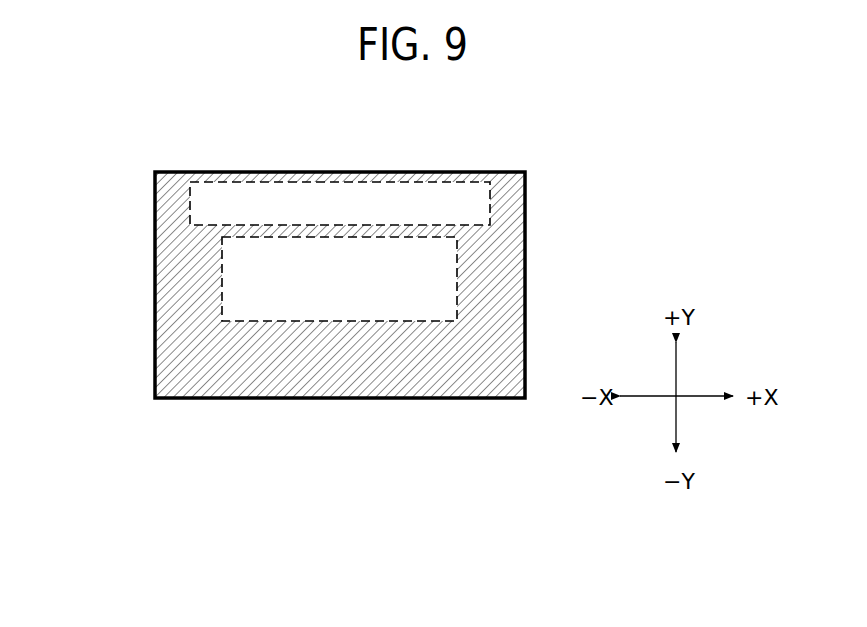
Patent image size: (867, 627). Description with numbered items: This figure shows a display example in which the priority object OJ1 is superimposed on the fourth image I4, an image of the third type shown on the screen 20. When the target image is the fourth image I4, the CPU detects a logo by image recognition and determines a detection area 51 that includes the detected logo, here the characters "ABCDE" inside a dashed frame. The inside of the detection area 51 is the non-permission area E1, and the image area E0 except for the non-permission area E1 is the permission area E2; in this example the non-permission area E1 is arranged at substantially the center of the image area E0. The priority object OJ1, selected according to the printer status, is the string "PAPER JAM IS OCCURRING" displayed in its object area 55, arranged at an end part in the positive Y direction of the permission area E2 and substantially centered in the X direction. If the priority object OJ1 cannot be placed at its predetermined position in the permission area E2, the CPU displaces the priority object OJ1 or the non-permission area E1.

The display screen 20 is at (528, 343).
The fourth image I4 is at (531, 209).
The object area 55 is at (328, 172).
The priority object OJ1 is at (430, 191).
The detection area 51 is at (395, 322).
The image area E0 is at (112, 237).
The non-permission area E1 is at (232, 262).
The permission area E2 is at (183, 315).